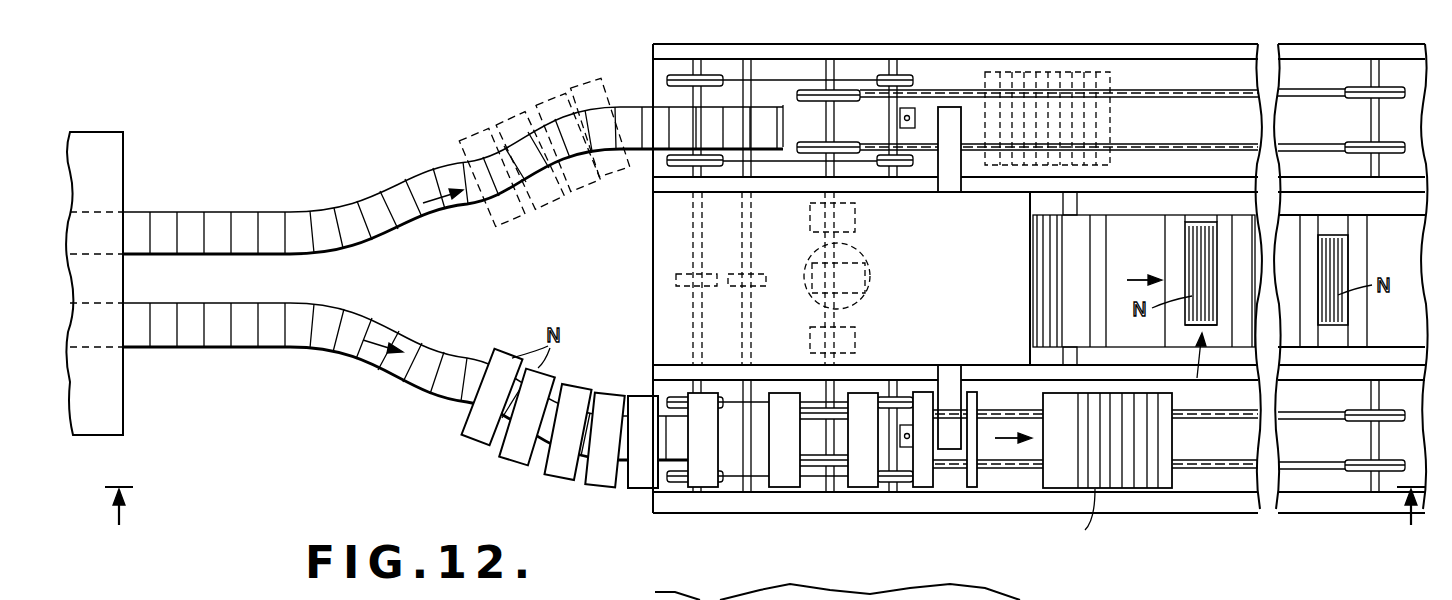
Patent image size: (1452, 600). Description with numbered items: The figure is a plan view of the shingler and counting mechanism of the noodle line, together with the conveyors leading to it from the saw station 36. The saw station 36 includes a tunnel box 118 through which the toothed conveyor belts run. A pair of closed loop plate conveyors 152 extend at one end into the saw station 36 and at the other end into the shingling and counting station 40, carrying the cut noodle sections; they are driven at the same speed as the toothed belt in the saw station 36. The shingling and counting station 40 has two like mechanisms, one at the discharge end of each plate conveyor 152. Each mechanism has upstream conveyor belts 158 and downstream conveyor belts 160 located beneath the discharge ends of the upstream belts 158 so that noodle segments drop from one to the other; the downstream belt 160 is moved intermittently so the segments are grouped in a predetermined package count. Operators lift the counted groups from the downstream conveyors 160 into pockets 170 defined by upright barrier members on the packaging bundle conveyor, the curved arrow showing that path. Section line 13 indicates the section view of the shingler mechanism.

The saw station 36 is at (106, 133).
The tunnel box 118 is at (126, 170).
The closed loop plate conveyors 152 is at (289, 212).
The upstream conveyor belts 158 is at (668, 80).
The downstream conveyor belts 160 is at (1150, 146).
The pockets 170 is at (1190, 232).
The shingling and counting station 40 is at (931, 302).
The section line 13 is at (765, 523).